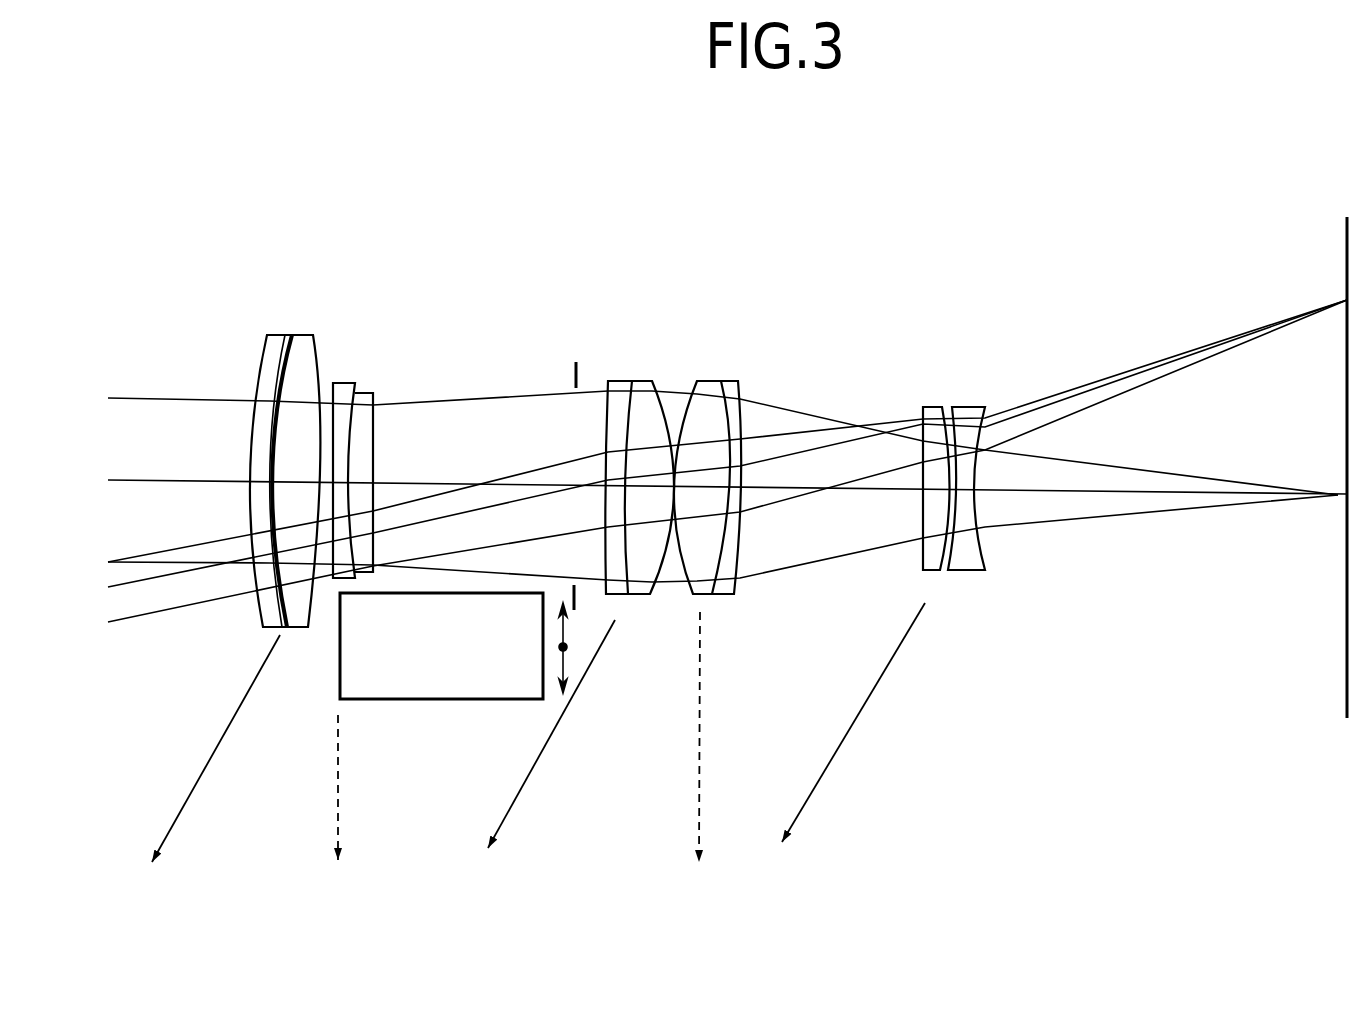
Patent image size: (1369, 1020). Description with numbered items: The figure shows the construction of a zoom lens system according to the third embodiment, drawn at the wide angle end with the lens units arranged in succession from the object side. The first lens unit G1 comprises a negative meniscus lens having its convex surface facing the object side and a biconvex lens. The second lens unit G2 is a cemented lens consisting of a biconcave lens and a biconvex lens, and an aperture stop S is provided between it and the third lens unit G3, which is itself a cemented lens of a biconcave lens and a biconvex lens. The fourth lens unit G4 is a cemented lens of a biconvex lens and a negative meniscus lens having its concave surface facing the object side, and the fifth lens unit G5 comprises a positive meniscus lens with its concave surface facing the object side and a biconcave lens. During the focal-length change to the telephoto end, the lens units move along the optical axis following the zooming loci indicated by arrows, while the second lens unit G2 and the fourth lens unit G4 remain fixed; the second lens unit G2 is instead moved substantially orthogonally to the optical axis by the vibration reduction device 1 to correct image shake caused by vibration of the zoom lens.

The first lens unit G1 is at (335, 282).
The second lens unit G2 is at (396, 358).
The third lens unit G3 is at (657, 364).
The fourth lens unit G4 is at (745, 364).
The fifth lens unit G5 is at (990, 389).
The aperture stop S is at (574, 368).
The vibration reduction device 1 is at (473, 700).